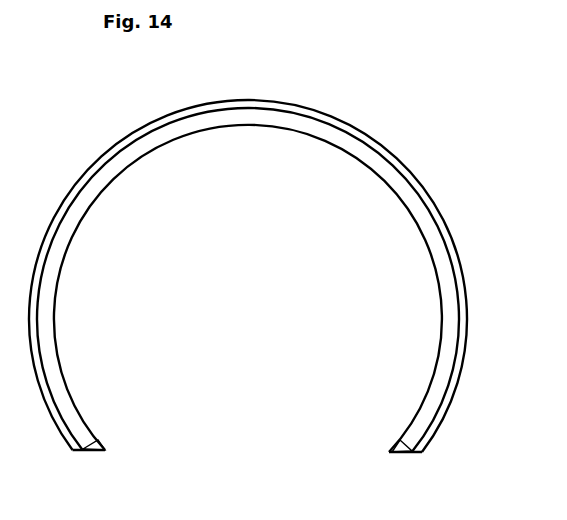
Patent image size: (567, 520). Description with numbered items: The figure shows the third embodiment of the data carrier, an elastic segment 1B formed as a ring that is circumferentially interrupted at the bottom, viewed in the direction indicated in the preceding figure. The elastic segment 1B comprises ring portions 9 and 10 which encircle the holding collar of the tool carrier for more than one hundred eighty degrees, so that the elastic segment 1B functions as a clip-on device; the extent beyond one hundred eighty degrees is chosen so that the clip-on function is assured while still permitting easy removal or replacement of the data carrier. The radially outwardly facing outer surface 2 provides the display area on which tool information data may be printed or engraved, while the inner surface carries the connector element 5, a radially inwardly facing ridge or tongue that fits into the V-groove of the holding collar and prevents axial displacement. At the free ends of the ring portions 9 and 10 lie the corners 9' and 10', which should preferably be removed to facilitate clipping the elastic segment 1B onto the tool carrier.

The elastic segment 1B is at (268, 97).
The outer surface 2 is at (350, 125).
The connector element 5 is at (308, 127).
The ring portion 9 is at (101, 450).
The corner 9' is at (124, 428).
The ring portion 10 is at (427, 428).
The corner 10' is at (371, 428).